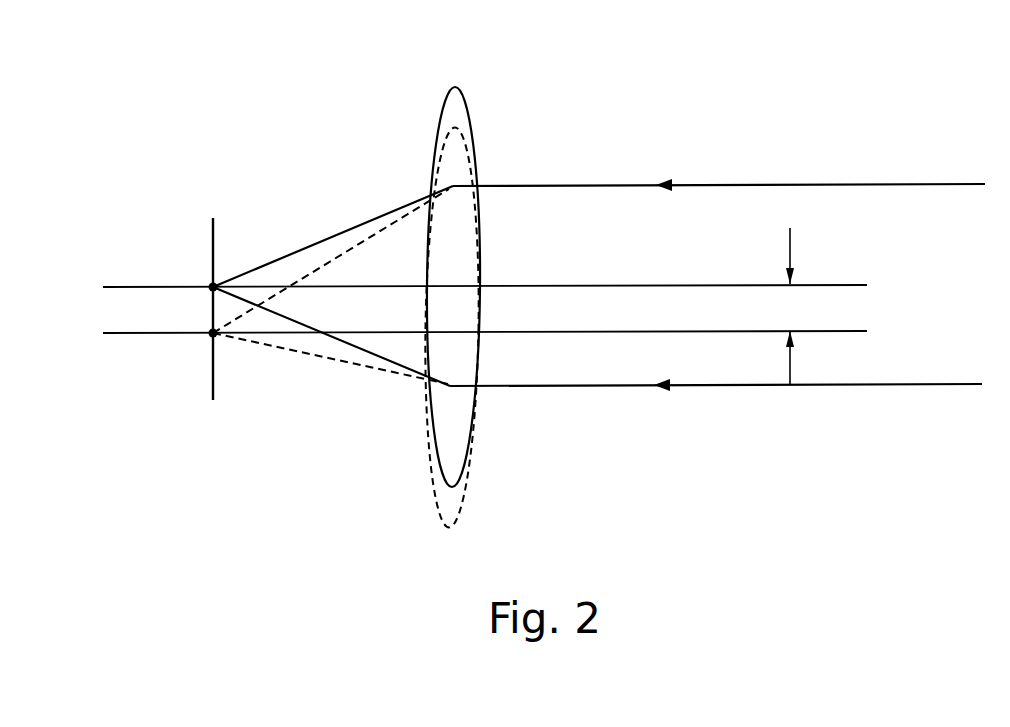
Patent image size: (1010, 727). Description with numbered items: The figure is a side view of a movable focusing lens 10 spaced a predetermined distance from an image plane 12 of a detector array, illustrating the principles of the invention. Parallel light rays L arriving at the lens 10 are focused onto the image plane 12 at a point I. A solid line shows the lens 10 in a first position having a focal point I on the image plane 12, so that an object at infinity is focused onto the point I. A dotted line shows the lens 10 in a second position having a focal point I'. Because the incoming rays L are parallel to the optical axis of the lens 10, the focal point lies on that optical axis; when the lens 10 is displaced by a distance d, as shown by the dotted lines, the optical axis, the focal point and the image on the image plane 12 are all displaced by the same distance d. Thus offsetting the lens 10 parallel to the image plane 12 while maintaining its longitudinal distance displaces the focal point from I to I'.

The movable focusing lens 10 is at (470, 108).
The image plane 12 is at (209, 389).
The incident light L is at (716, 214).
The focal point I is at (318, 286).
The focal point I' is at (315, 286).
The distance d is at (785, 306).